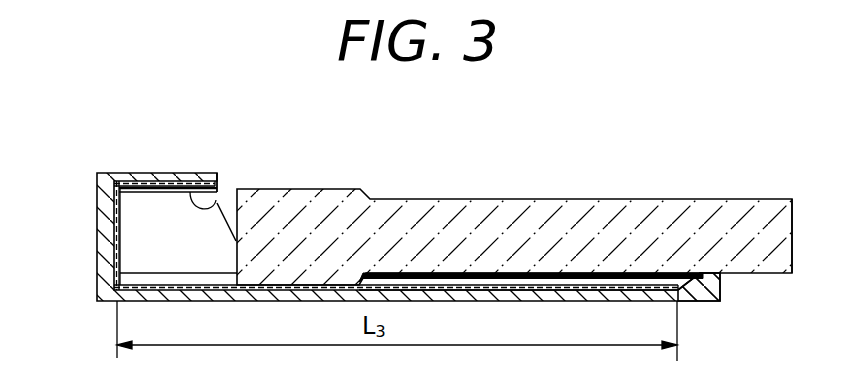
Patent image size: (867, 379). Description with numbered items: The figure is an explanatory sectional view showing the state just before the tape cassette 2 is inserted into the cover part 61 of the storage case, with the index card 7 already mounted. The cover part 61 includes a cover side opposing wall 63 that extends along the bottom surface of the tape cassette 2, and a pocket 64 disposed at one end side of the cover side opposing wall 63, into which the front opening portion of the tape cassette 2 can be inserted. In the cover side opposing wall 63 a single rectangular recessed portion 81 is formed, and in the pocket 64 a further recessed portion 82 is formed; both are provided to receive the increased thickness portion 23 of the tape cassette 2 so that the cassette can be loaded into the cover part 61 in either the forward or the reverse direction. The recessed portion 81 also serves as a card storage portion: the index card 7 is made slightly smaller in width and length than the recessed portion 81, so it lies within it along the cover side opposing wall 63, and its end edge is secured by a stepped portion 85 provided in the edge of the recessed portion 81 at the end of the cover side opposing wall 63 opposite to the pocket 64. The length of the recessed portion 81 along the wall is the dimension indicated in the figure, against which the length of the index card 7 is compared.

The tape cassette 2 is at (712, 199).
The index card 7 is at (517, 288).
The increased thickness portion 23 is at (335, 189).
The cover part 61 is at (97, 233).
The cover side opposing wall 63 is at (693, 301).
The pocket 64 is at (148, 208).
The recessed portion 81 is at (433, 274).
The recessed portion 82 is at (218, 203).
The stepped portion 85 is at (678, 287).